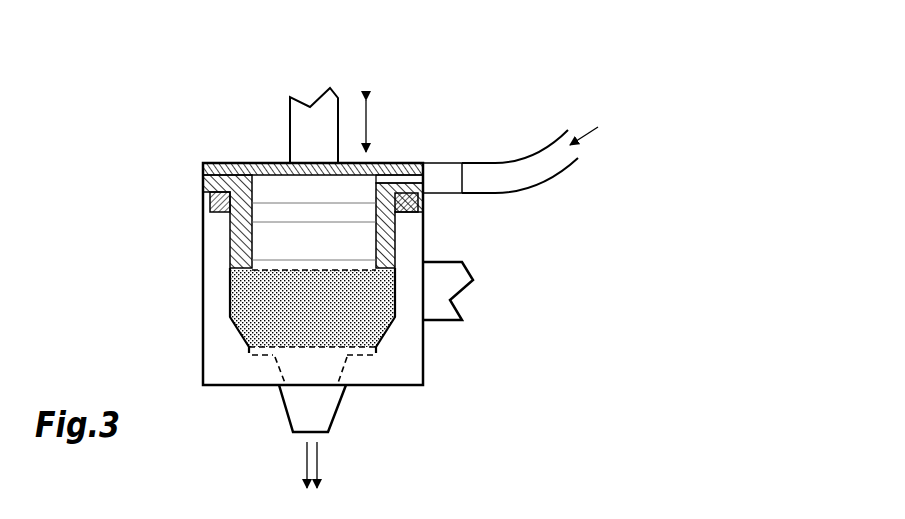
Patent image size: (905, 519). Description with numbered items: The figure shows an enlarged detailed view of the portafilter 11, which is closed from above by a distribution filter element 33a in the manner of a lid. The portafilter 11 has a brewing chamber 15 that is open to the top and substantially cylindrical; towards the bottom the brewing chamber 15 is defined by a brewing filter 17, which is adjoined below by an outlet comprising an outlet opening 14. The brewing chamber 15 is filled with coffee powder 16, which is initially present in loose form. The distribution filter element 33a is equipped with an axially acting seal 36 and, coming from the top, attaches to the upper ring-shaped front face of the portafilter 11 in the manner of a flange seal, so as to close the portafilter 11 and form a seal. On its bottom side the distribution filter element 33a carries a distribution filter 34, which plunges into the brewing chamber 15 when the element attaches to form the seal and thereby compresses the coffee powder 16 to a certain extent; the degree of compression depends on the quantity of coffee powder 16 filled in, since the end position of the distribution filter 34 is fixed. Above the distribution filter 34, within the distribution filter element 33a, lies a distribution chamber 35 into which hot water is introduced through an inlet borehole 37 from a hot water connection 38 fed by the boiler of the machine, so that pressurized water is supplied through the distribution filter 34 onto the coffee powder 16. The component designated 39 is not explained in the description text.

The portafilter 11 is at (443, 387).
The outlet opening 14 is at (325, 413).
The brewing chamber 15 is at (230, 310).
The coffee powder 16 is at (367, 327).
The brewing filter 17 is at (267, 347).
The distribution filter element 33a is at (203, 165).
The distribution filter 34 is at (278, 270).
The distribution chamber 35 is at (347, 243).
The axially acting seal 36 is at (210, 200).
The inlet borehole 37 is at (405, 177).
The hot water connection 38 is at (512, 175).
The plunger rod 39 is at (328, 105).